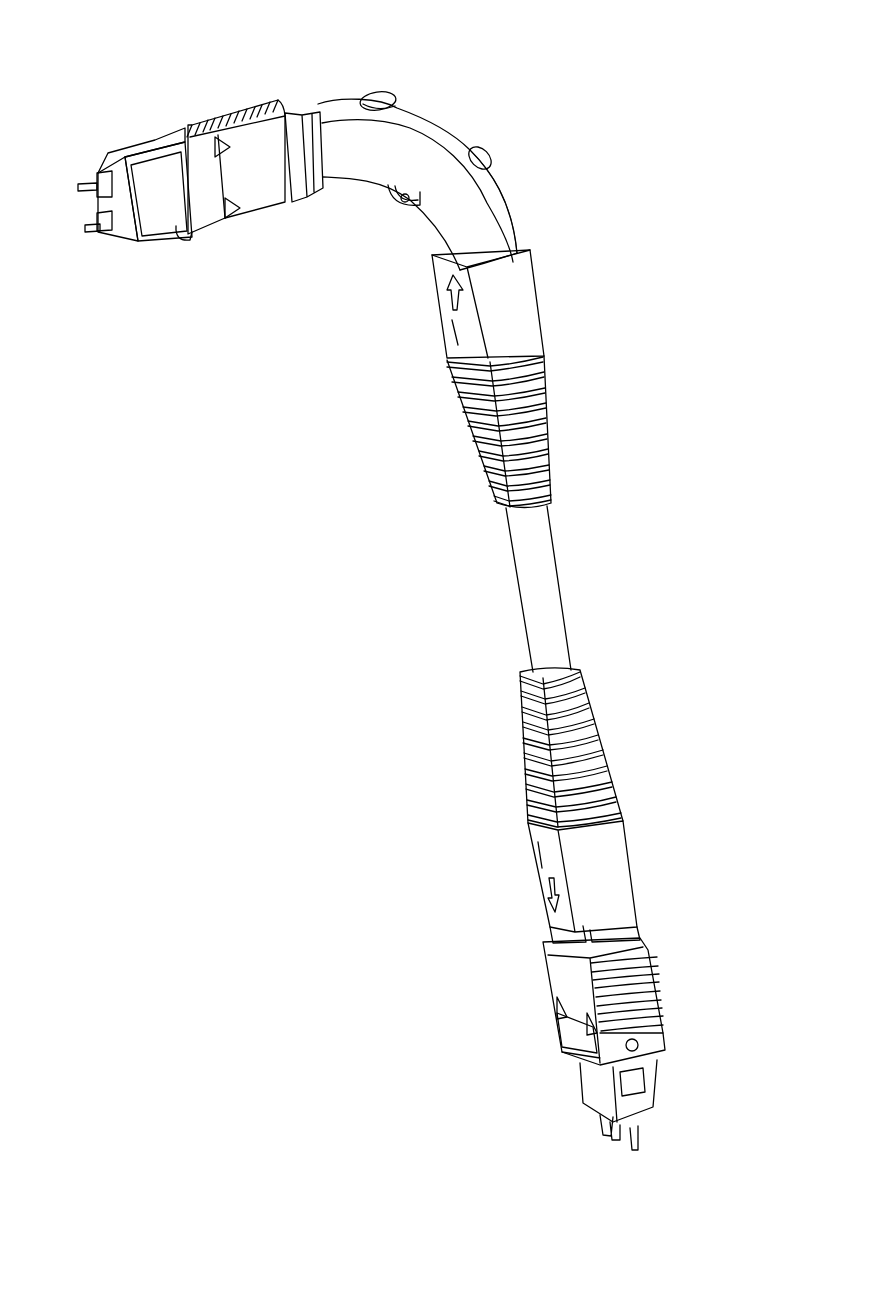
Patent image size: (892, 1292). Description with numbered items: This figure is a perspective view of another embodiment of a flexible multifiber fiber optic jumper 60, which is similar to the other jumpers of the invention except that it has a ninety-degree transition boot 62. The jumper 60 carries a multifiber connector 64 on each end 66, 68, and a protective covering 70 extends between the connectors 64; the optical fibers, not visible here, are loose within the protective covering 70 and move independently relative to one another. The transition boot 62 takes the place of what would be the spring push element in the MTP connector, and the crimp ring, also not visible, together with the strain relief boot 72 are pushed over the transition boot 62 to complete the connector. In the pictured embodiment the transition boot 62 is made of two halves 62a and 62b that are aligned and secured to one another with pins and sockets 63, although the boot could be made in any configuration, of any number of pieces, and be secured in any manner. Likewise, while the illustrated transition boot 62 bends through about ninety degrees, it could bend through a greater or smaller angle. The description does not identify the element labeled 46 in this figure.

The flexible multifiber fiber optic jumper 60 is at (443, 600).
The transition boot 62 is at (438, 110).
The half of transition boot 62a is at (487, 207).
The half of transition boot 62b is at (328, 100).
The pins and sockets 63 is at (495, 156).
The latch tab 46 is at (331, 212).
The multifiber connector 64 is at (213, 112).
The end 66 is at (246, 270).
The end 68 is at (673, 928).
The protective covering 70 is at (581, 579).
The strain relief boot 72 is at (555, 325).